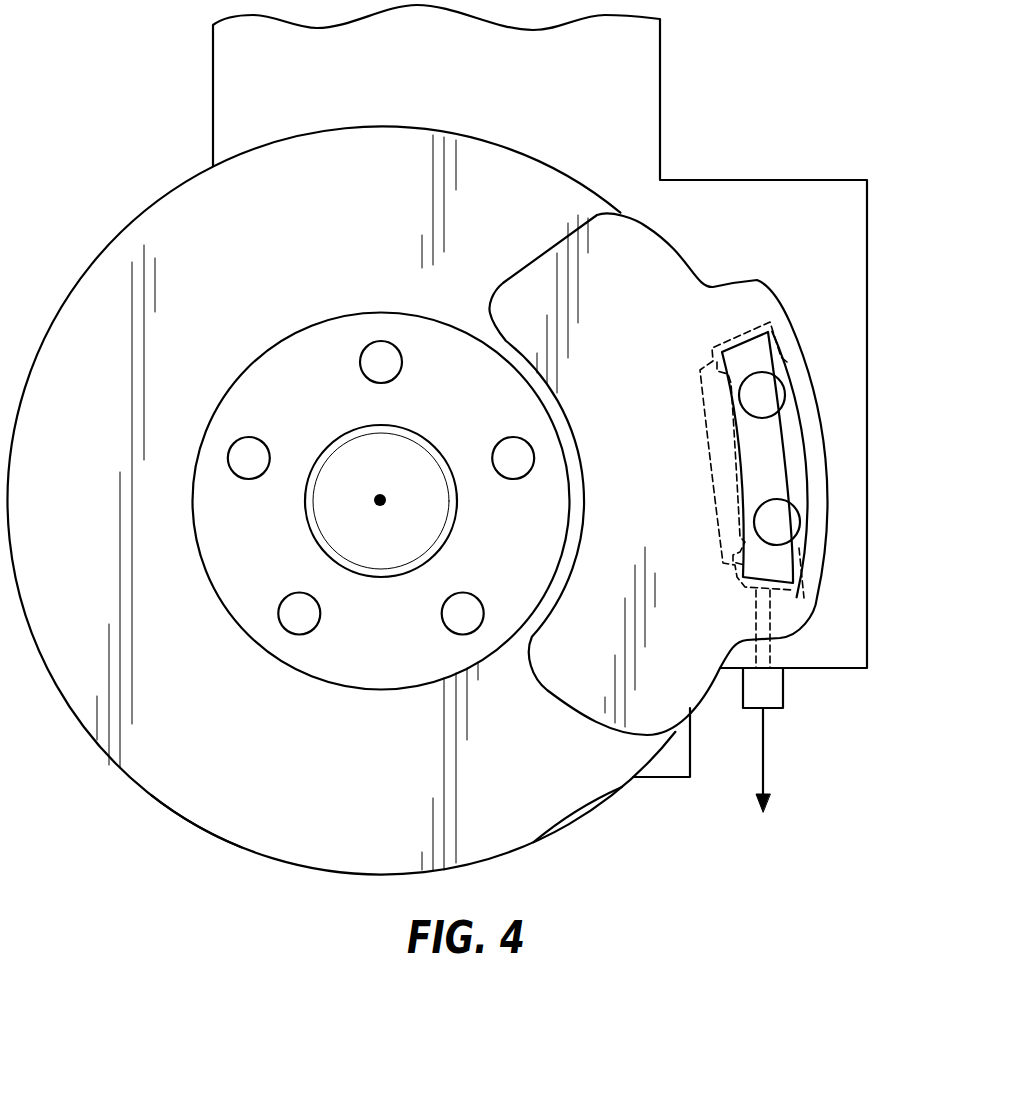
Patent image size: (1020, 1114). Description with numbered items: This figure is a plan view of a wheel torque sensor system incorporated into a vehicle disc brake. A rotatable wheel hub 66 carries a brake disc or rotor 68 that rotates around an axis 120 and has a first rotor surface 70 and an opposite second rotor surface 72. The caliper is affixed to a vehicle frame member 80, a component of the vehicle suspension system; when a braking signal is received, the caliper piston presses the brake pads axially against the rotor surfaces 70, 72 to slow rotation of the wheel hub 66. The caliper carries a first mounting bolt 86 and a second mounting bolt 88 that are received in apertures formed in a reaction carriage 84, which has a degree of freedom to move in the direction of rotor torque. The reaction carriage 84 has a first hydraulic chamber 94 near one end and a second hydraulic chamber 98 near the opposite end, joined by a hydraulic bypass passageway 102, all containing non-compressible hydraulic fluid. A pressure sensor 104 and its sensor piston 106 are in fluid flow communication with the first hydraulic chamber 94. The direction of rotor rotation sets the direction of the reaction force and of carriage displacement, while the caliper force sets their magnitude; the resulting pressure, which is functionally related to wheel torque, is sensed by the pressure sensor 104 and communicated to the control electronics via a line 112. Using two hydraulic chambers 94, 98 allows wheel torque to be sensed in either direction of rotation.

The wheel hub 66 is at (345, 532).
The rotor 68 is at (313, 776).
The first rotor surface 70 is at (200, 830).
The second rotor surface 72 is at (577, 817).
The vehicle frame member 80 is at (566, 108).
The reaction carriage 84 is at (753, 355).
The first mounting bolt 86 is at (783, 513).
The second mounting bolt 88 is at (768, 400).
The first hydraulic chamber 94 is at (800, 592).
The second hydraulic chamber 98 is at (727, 345).
The hydraulic bypass passageway 102 is at (718, 428).
The pressure sensor 104 is at (777, 692).
The sensor piston 106 is at (773, 650).
The line 112 is at (766, 770).
The axis 120 is at (380, 495).